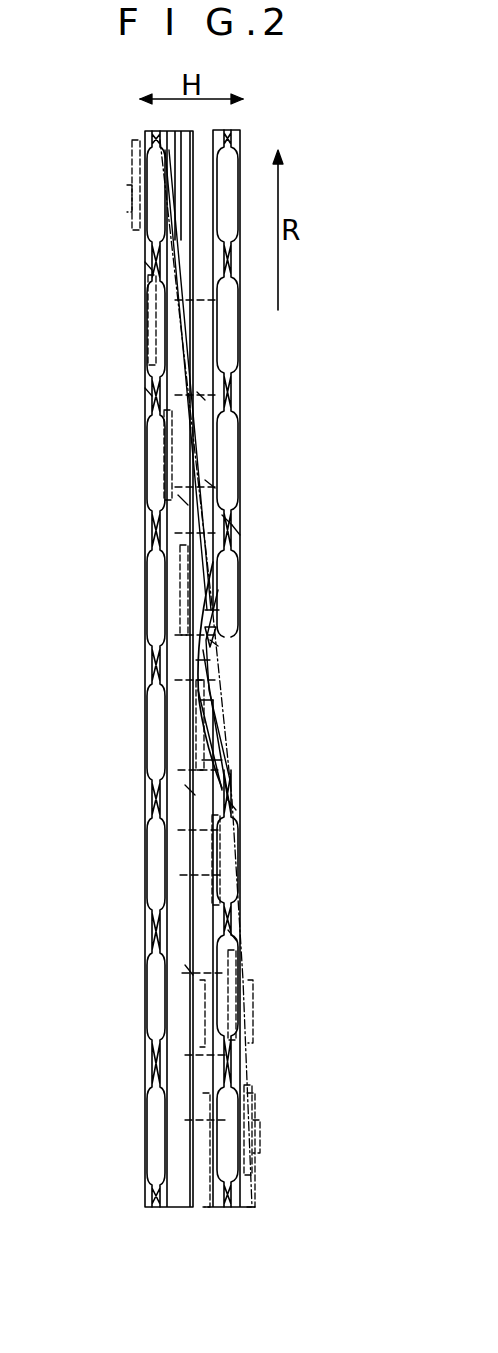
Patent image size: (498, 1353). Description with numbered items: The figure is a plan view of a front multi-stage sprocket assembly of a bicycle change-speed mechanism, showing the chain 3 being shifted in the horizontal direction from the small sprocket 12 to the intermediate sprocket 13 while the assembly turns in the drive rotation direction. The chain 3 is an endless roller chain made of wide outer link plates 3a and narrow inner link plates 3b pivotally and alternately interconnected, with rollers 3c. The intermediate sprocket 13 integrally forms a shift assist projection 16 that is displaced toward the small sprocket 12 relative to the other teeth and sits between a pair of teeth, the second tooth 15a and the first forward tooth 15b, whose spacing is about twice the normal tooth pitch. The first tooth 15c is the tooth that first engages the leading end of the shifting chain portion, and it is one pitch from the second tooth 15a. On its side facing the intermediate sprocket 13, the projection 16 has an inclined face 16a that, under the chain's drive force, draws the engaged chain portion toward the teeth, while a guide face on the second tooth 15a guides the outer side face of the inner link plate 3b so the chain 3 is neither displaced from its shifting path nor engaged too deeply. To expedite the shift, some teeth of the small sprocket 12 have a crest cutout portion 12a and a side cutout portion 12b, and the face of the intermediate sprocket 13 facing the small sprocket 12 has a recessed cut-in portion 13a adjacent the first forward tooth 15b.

The chain 3 is at (265, 1117).
The outer link plate 3a is at (197, 397).
The inner link plate 3b is at (227, 521).
The roller 3c is at (183, 498).
The small sprocket 12 is at (143, 1035).
The crest cutout portion 12a is at (150, 394).
The side cutout portion 12b is at (145, 268).
The intermediate sprocket 13 is at (238, 300).
The cut-in portion 13a is at (215, 486).
The second tooth 15a is at (233, 803).
The first forward tooth 15b is at (237, 530).
The first tooth 15c is at (233, 934).
The shift assist projection 16 is at (191, 663).
The inclined face 16a is at (205, 677).